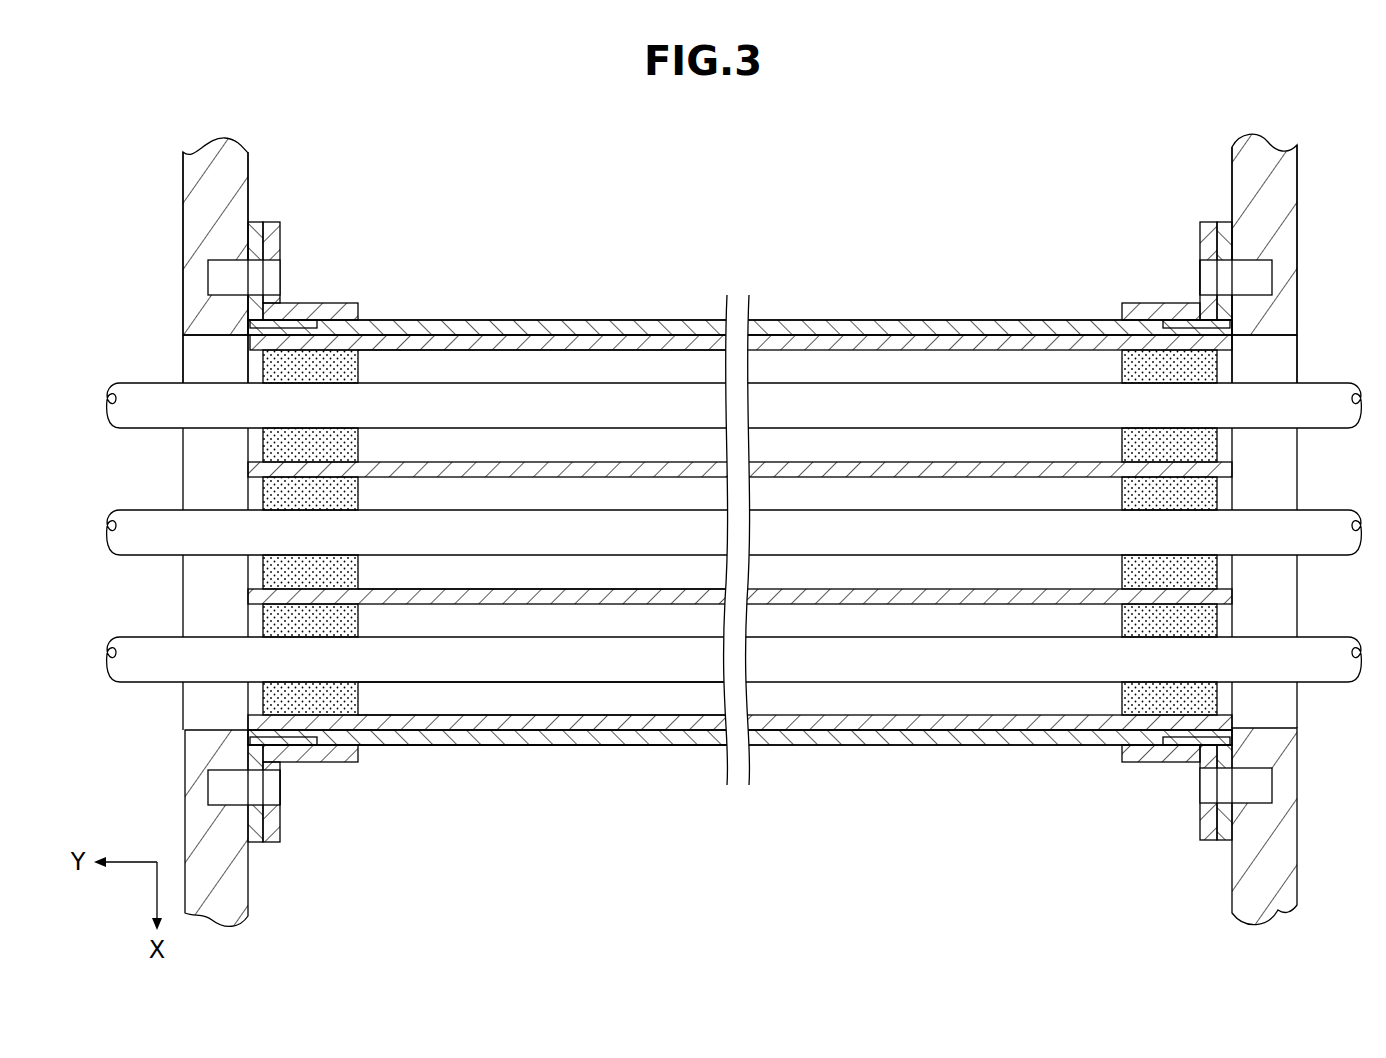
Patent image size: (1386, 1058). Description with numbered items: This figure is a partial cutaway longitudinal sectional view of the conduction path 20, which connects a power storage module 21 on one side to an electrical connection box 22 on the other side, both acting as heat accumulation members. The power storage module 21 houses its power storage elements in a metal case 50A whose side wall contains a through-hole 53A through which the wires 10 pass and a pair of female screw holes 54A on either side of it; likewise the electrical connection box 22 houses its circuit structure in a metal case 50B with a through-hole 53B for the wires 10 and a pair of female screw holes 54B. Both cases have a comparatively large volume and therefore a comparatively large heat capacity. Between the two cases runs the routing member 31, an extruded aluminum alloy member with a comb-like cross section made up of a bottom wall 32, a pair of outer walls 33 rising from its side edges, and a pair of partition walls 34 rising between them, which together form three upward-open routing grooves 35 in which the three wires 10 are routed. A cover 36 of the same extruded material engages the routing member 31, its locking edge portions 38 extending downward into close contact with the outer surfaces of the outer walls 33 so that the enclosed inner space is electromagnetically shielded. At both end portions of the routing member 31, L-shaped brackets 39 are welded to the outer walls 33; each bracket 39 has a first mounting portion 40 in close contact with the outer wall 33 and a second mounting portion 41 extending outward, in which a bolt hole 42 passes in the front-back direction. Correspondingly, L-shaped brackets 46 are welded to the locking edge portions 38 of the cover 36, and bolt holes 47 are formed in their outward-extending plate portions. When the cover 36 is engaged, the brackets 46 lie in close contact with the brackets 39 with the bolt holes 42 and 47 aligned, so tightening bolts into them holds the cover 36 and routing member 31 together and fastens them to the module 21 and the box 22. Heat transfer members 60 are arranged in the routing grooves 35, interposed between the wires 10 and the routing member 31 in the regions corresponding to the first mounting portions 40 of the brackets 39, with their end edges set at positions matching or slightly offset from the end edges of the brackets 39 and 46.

The wire 10 is at (575, 655).
The conduction path 20 is at (493, 268).
The power storage module 21 is at (200, 257).
The electrical connection box 22 is at (1265, 222).
The routing member 31 is at (448, 282).
The bottom wall 32 is at (510, 697).
The outer wall 33 is at (627, 340).
The partition wall 34 is at (676, 462).
The routing groove 35 is at (418, 353).
The cover 36 is at (622, 772).
The locking edge portion 38 is at (450, 737).
The bracket 39 is at (252, 315).
The first mounting portion 40 is at (297, 323).
The second mounting portion 41 is at (257, 243).
The bolt hole 42 is at (268, 277).
The bracket 46 is at (1140, 308).
The bolt hole 47 is at (1210, 260).
The case 50A is at (200, 318).
The case 50B is at (1278, 310).
The through-hole 53A is at (226, 338).
The through-hole 53B is at (1253, 337).
The female screw hole 54A is at (229, 262).
The female screw hole 54B is at (1270, 268).
The heat transfer member 60 is at (290, 443).